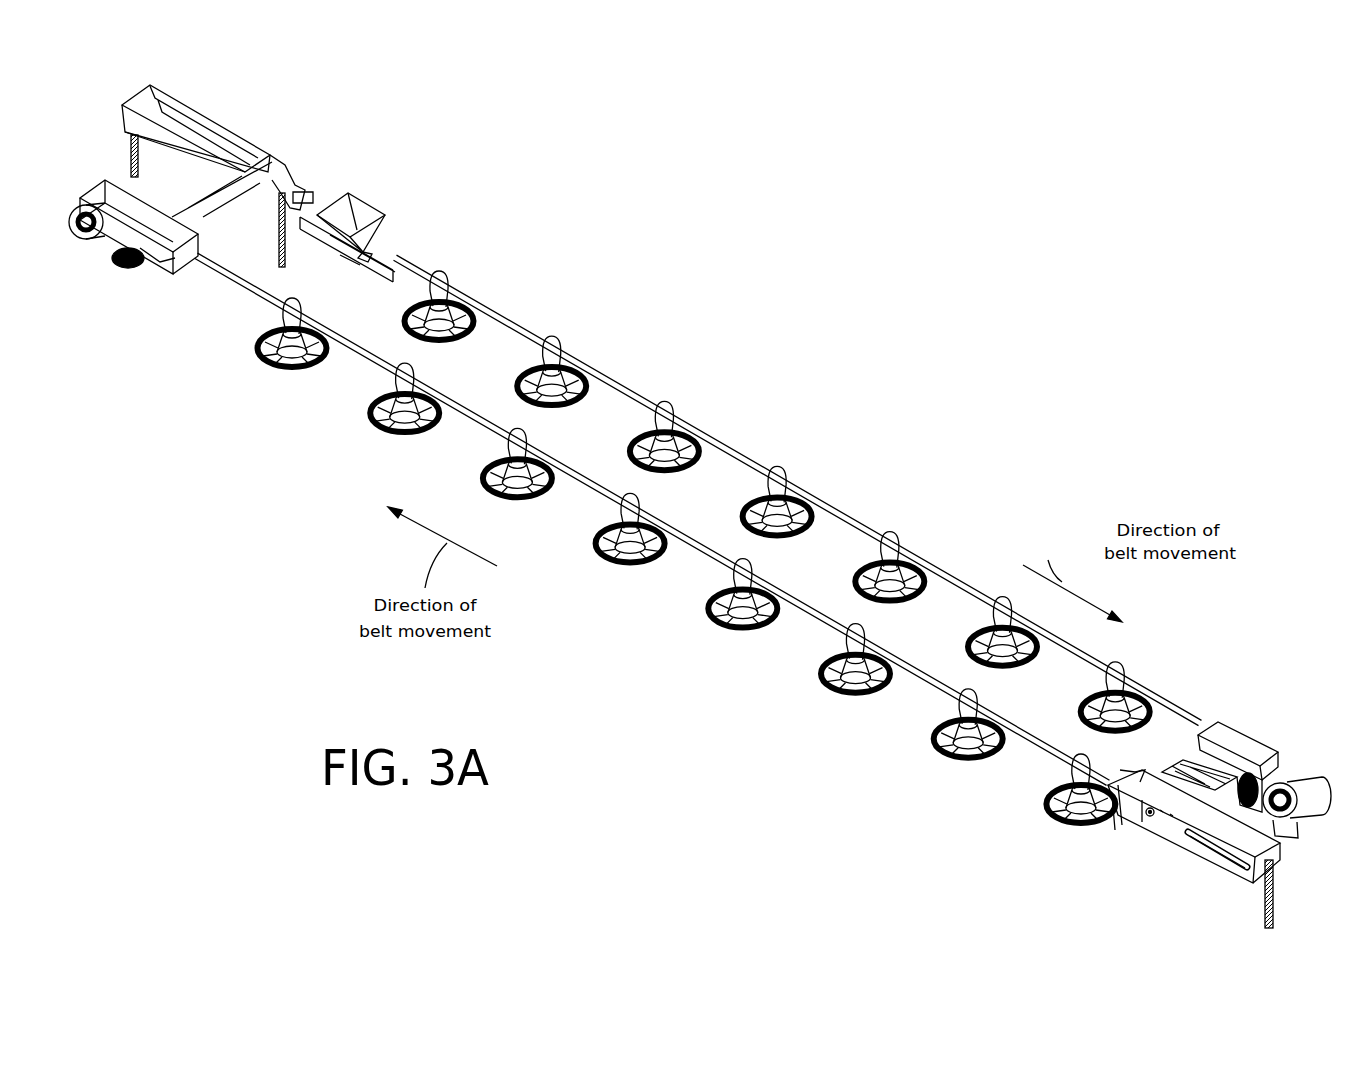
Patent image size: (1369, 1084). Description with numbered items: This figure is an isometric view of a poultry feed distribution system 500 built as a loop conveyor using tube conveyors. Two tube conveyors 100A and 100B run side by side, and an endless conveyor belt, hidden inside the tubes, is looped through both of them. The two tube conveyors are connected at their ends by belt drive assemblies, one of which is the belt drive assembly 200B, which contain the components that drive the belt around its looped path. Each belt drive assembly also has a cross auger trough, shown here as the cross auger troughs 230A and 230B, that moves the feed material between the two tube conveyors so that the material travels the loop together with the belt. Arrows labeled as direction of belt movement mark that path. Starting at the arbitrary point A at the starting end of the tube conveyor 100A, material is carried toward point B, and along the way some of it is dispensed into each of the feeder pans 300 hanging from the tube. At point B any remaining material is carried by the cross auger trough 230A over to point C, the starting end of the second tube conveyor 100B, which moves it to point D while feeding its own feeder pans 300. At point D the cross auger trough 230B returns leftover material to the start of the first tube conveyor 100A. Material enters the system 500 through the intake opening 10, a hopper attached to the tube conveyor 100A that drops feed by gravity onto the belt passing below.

The intake opening 10 is at (385, 186).
The tube conveyor 100A is at (500, 320).
The tube conveyor 100B is at (362, 355).
The feeder pans 300 is at (915, 563).
The poultry feed distribution system 500 is at (780, 380).
The cross auger trough 230A is at (1237, 778).
The cross auger trough 230B is at (193, 187).
The belt drive assembly 200B is at (1190, 868).
The point A is at (283, 132).
The point B is at (1274, 728).
The point C is at (1120, 817).
The point D is at (160, 273).